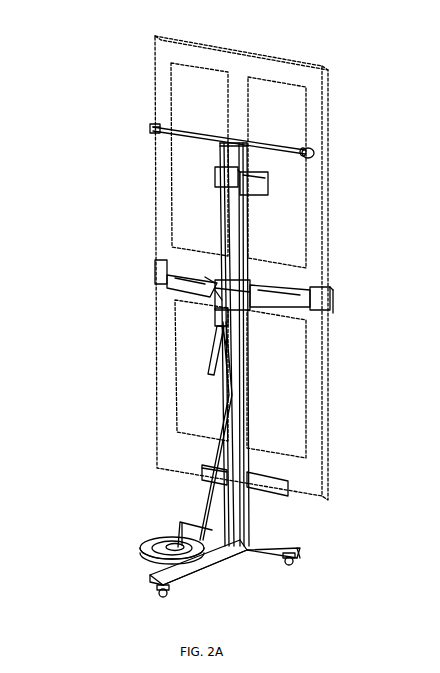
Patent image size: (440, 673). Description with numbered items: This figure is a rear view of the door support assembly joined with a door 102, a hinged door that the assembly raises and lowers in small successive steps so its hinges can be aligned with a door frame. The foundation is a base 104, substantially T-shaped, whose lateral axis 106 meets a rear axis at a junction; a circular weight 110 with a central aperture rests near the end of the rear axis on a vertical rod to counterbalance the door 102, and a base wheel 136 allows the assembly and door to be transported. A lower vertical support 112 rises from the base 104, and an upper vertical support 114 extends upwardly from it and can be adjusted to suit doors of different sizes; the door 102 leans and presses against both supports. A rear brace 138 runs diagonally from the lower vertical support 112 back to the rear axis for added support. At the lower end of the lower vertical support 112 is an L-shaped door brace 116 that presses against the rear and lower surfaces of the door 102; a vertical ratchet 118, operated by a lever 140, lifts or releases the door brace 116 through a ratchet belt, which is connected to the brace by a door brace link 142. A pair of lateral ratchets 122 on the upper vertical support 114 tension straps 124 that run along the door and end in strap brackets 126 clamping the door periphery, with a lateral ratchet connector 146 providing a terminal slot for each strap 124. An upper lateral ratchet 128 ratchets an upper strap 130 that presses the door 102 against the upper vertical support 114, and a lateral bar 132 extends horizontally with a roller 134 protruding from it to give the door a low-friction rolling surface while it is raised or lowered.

The door 102 is at (330, 115).
The base 104 is at (244, 569).
The lateral axis 106 is at (300, 546).
The weight 110 is at (140, 548).
The lower vertical support 112 is at (252, 415).
The upper vertical support 114 is at (205, 277).
The door brace 116 is at (202, 468).
The vertical ratchet 118 is at (212, 350).
The lateral ratchet 122 is at (162, 312).
The strap 124 is at (160, 297).
The strap bracket 126 is at (155, 270).
The upper lateral ratchet 128 is at (268, 188).
The upper strap 130 is at (170, 158).
The lateral bar 132 is at (262, 148).
The roller 134 is at (313, 154).
The base wheel 136 is at (155, 590).
The rear brace 138 is at (203, 520).
The lever 140 is at (210, 362).
The door brace link 142 is at (288, 484).
The lateral ratchet connector 146 is at (212, 288).